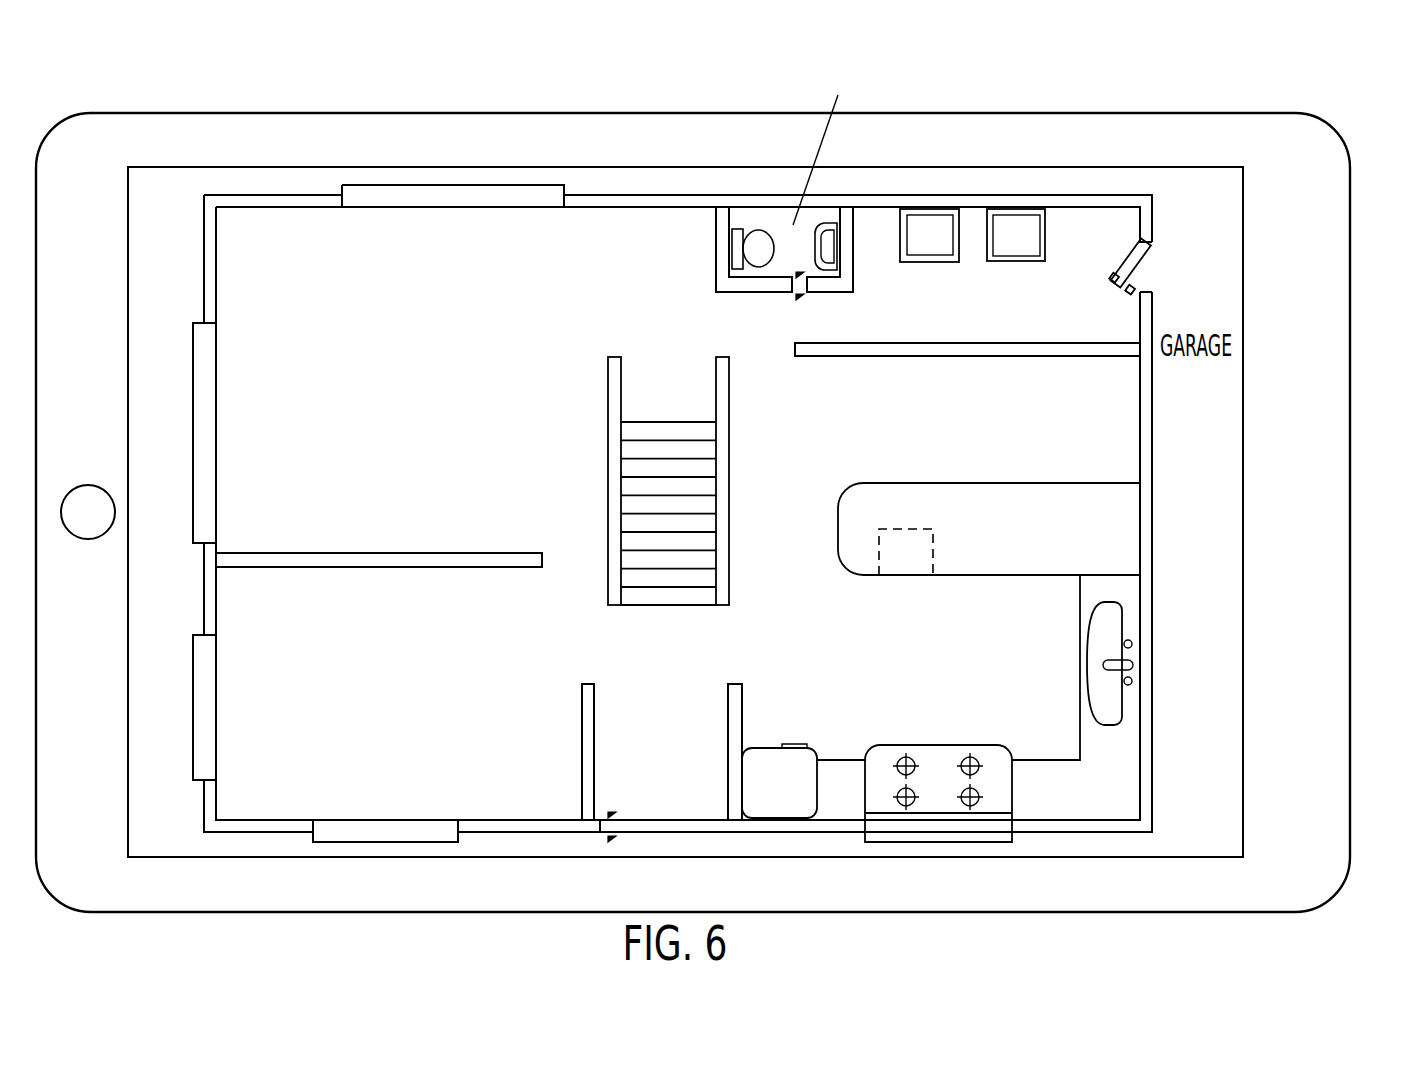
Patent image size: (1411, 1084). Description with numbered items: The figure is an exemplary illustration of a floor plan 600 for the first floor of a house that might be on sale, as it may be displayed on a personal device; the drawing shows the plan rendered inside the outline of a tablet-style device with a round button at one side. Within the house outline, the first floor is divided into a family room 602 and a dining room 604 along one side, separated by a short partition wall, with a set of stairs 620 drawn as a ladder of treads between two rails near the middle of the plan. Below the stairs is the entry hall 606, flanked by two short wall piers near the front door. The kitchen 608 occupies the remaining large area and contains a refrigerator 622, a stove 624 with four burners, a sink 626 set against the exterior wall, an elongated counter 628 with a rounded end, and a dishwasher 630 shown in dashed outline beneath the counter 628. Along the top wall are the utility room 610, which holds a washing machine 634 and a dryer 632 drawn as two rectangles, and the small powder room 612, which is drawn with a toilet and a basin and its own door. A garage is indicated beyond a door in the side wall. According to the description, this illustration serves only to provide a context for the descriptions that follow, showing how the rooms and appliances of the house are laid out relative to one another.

The floor plan 600 is at (1333, 121).
The family room 602 is at (382, 388).
The dining room 604 is at (381, 684).
The entry hall 606 is at (645, 779).
The kitchen 608 is at (910, 680).
The utility room 610 is at (962, 307).
The powder room 612 is at (778, 262).
The stairs 620 is at (621, 472).
The refrigerator 622 is at (766, 762).
The stove 624 is at (943, 762).
The sink 626 is at (1133, 666).
The counter 628 is at (1105, 530).
The dishwasher 630 is at (907, 549).
The dryer 632 is at (1018, 228).
The washing machine 634 is at (926, 228).